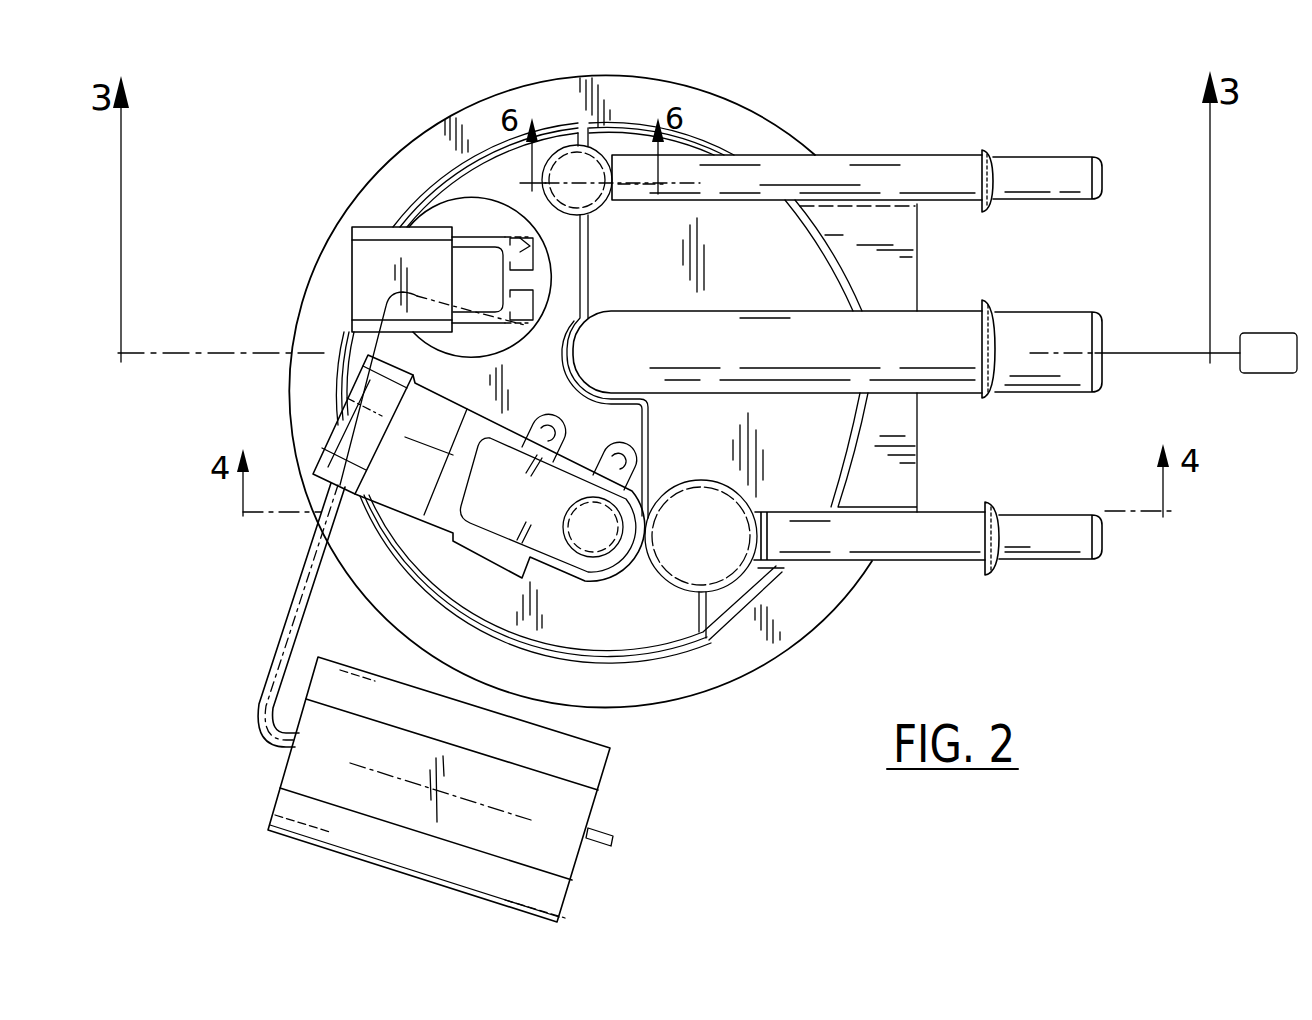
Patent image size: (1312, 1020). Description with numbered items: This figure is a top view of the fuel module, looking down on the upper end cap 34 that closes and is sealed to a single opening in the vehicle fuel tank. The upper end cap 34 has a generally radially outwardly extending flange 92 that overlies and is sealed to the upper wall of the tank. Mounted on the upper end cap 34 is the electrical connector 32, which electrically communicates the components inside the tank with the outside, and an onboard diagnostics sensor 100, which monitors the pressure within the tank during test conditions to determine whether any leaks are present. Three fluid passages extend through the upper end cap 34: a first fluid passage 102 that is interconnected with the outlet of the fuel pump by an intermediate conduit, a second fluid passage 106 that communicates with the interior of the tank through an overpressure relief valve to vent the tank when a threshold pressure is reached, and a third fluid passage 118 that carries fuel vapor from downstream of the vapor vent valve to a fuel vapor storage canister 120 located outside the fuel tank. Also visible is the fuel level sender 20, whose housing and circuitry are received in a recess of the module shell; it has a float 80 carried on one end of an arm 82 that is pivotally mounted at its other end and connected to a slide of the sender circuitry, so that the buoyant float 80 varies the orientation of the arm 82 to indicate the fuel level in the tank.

The fuel level sender 20 is at (731, 498).
The electrical connector 32 is at (377, 227).
The upper end cap 34 is at (731, 663).
The float 80 is at (606, 758).
The arm 82 is at (288, 618).
The flange 92 is at (743, 109).
The onboard diagnostics (OBD) sensor 100 is at (326, 417).
The first fluid passage 102 is at (1088, 566).
The second fluid passage 106 is at (1069, 156).
The third fluid passage 118 is at (1080, 312).
The fuel vapor storage canister 120 is at (1247, 333).